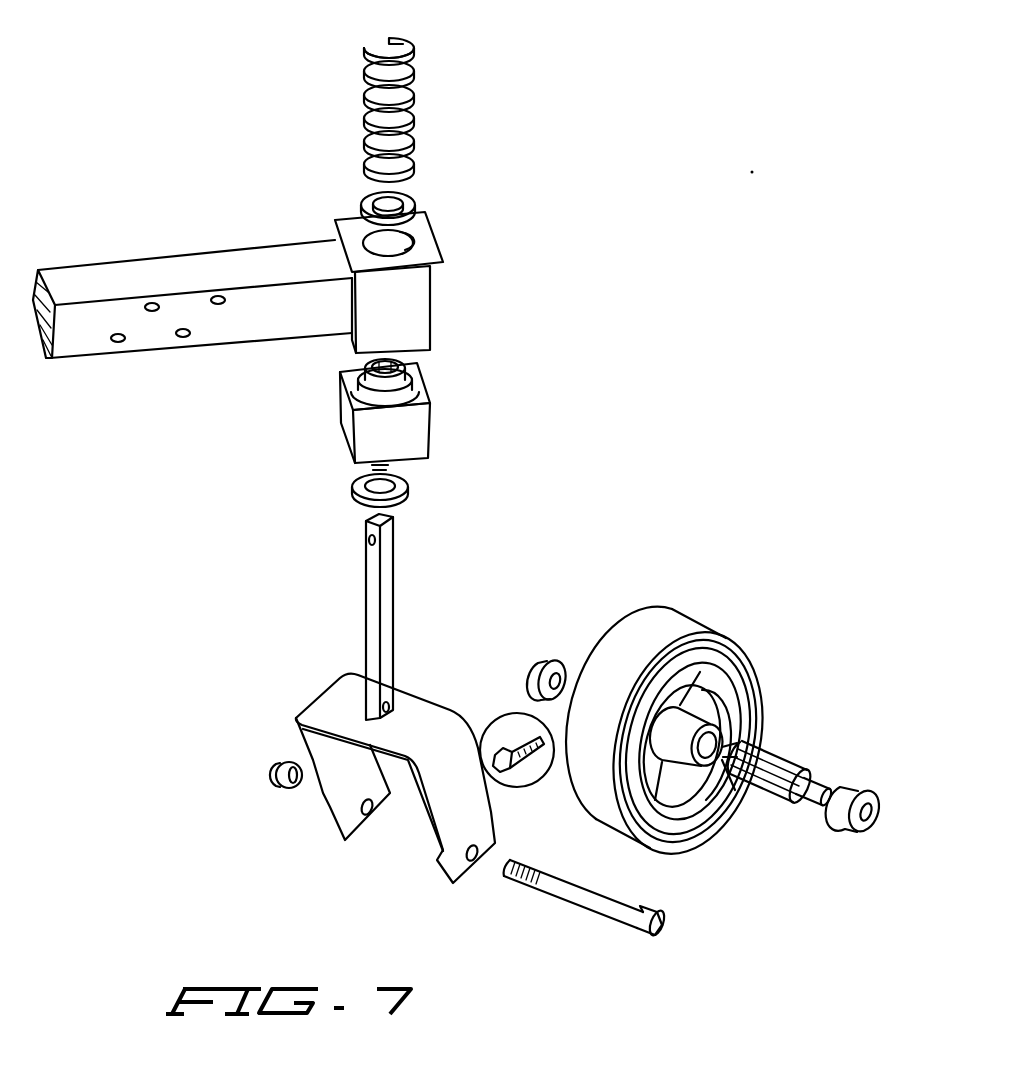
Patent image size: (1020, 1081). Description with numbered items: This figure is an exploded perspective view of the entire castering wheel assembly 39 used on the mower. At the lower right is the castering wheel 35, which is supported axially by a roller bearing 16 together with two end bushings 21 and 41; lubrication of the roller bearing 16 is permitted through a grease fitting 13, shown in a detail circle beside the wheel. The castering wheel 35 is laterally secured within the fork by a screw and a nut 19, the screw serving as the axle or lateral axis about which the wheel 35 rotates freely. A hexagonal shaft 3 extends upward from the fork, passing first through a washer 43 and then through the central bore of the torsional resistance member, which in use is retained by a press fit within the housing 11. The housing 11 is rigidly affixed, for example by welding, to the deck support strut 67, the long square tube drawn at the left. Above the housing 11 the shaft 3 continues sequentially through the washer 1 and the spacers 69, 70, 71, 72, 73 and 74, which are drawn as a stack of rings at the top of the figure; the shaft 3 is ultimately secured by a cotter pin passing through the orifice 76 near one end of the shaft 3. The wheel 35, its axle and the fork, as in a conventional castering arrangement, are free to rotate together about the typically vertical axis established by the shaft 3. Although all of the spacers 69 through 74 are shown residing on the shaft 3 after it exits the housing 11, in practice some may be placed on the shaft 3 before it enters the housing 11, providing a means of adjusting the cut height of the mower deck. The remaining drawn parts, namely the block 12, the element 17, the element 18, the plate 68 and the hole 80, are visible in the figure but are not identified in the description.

The washer 1 is at (430, 192).
The hexagonal shaft 3 is at (322, 615).
The housing 11 is at (432, 307).
The lower housing block 12 is at (437, 428).
The grease fitting 13 is at (507, 720).
The roller bearing 16 is at (778, 738).
The axle end 17 is at (807, 800).
The bolt 18 is at (608, 928).
The nut 19 is at (280, 782).
The end bushing 21 is at (548, 638).
The castering wheel 35 is at (670, 592).
The castering wheel assembly 39 is at (608, 413).
The end bushing 41 is at (852, 783).
The washer 43 is at (410, 483).
The deck support strut 67 is at (300, 303).
The mounting plate 68 is at (423, 232).
The spacer 69 is at (408, 95).
The spacer 70 is at (414, 167).
The spacer 71 is at (364, 145).
The spacer 72 is at (414, 125).
The spacer 73 is at (414, 78).
The spacer 74 is at (411, 40).
The orifice 76 is at (367, 538).
The lower shaft hole 80 is at (390, 700).